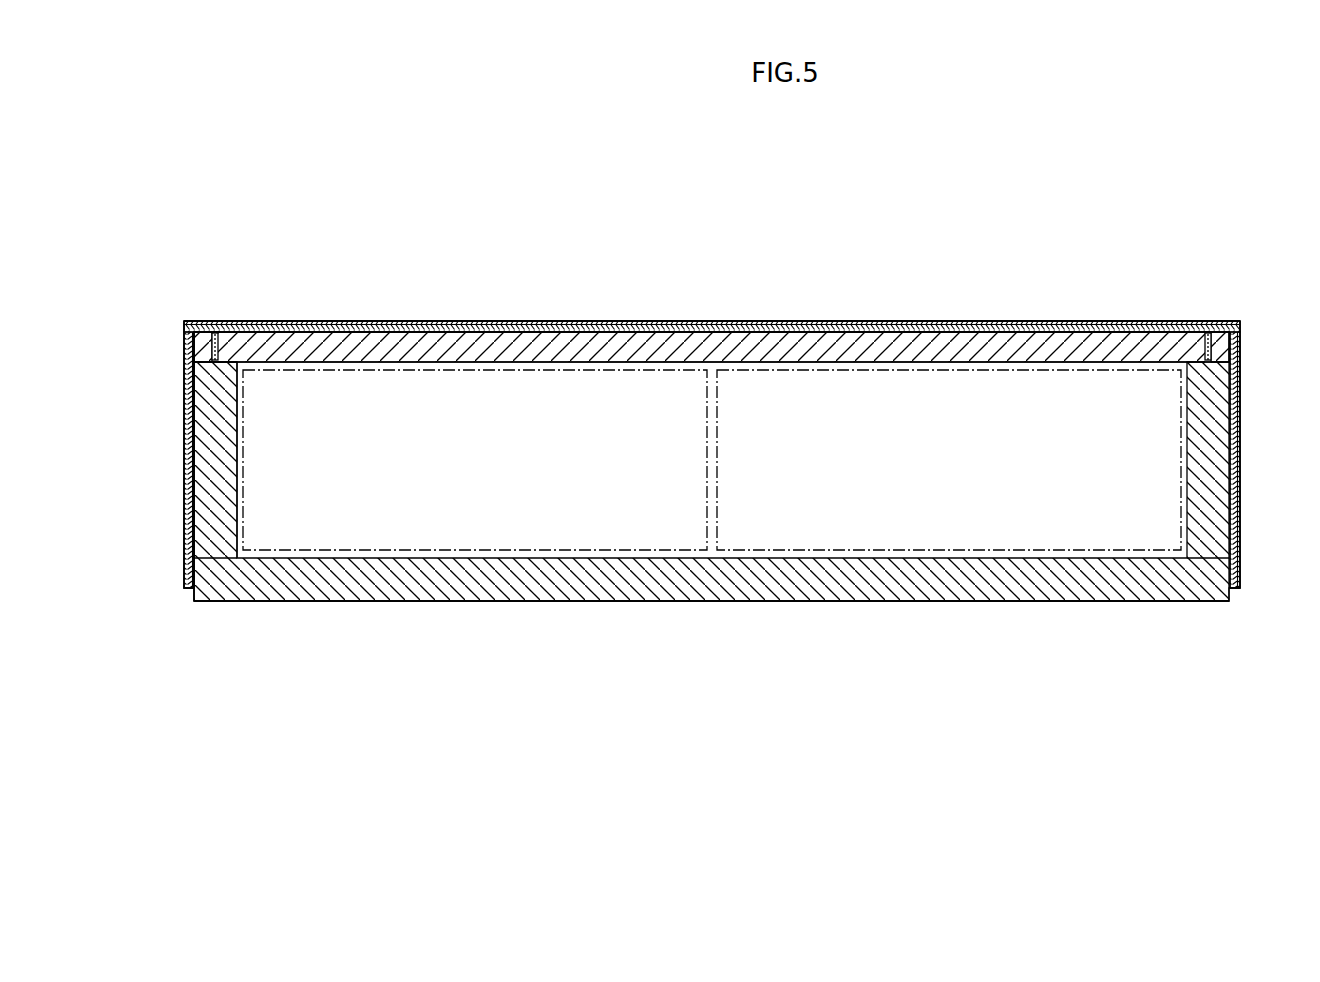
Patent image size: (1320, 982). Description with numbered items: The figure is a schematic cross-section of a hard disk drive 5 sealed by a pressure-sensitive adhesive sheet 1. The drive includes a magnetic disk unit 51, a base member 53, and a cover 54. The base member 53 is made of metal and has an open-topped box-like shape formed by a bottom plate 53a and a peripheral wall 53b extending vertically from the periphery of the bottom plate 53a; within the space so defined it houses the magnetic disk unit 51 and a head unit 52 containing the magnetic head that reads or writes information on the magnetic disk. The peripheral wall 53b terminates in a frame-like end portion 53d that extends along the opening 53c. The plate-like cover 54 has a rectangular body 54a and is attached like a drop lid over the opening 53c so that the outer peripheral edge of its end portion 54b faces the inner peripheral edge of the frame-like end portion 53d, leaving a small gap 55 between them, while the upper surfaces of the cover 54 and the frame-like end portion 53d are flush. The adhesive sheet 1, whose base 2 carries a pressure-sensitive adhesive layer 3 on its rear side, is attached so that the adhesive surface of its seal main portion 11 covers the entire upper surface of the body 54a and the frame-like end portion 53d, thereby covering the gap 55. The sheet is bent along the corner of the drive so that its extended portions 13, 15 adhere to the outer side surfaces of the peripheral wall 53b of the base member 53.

The pressure-sensitive adhesive sheet 1 is at (608, 258).
The base 2 is at (543, 321).
The pressure-sensitive adhesive layer 3 is at (595, 321).
The hard disk drive 5 is at (1218, 649).
The seal main portion 11 is at (943, 321).
The extended portion 13 is at (1242, 453).
The extended portion 15 is at (190, 456).
The magnetic disk unit 51 is at (975, 530).
The head unit 52 is at (490, 530).
The base member 53 is at (688, 606).
The bottom plate 53a is at (592, 602).
The peripheral wall 53b is at (193, 518).
The opening 53c is at (237, 390).
The frame-like end portion 53d is at (185, 343).
The cover 54 is at (658, 327).
The body 54a is at (815, 340).
The end portion 54b is at (245, 343).
The gap 55 is at (215, 336).